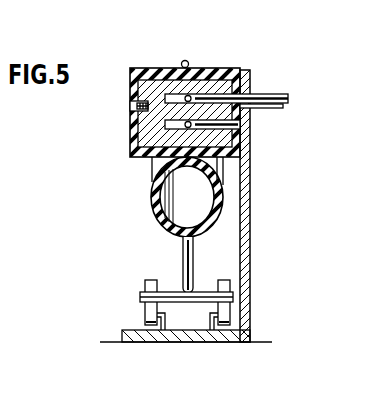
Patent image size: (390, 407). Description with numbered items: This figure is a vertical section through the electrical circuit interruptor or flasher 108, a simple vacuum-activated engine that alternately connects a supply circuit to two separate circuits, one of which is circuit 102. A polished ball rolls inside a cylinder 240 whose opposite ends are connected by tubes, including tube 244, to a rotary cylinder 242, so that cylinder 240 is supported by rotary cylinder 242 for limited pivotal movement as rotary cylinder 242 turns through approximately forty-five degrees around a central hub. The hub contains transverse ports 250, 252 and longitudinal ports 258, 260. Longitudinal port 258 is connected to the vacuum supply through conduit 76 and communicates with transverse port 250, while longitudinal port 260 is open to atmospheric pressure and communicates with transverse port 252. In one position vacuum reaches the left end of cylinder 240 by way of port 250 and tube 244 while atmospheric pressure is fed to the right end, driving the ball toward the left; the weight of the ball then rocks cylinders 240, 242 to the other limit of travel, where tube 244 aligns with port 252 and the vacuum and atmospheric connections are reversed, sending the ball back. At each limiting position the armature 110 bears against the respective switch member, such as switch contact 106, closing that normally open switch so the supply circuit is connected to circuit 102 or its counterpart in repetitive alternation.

The conduit 76 is at (262, 93).
The circuit 102 is at (250, 312).
The switch contact 106 is at (145, 310).
The electrical circuit interruptor 108 is at (147, 261).
The armature 110 is at (191, 268).
The cylinder 240 is at (152, 204).
The rotary cylinder 242 is at (131, 93).
The tube 244 is at (185, 60).
The transverse port 250 is at (130, 105).
The transverse port 252 is at (150, 130).
The longitudinal port 258 is at (249, 113).
The longitudinal port 260 is at (249, 140).